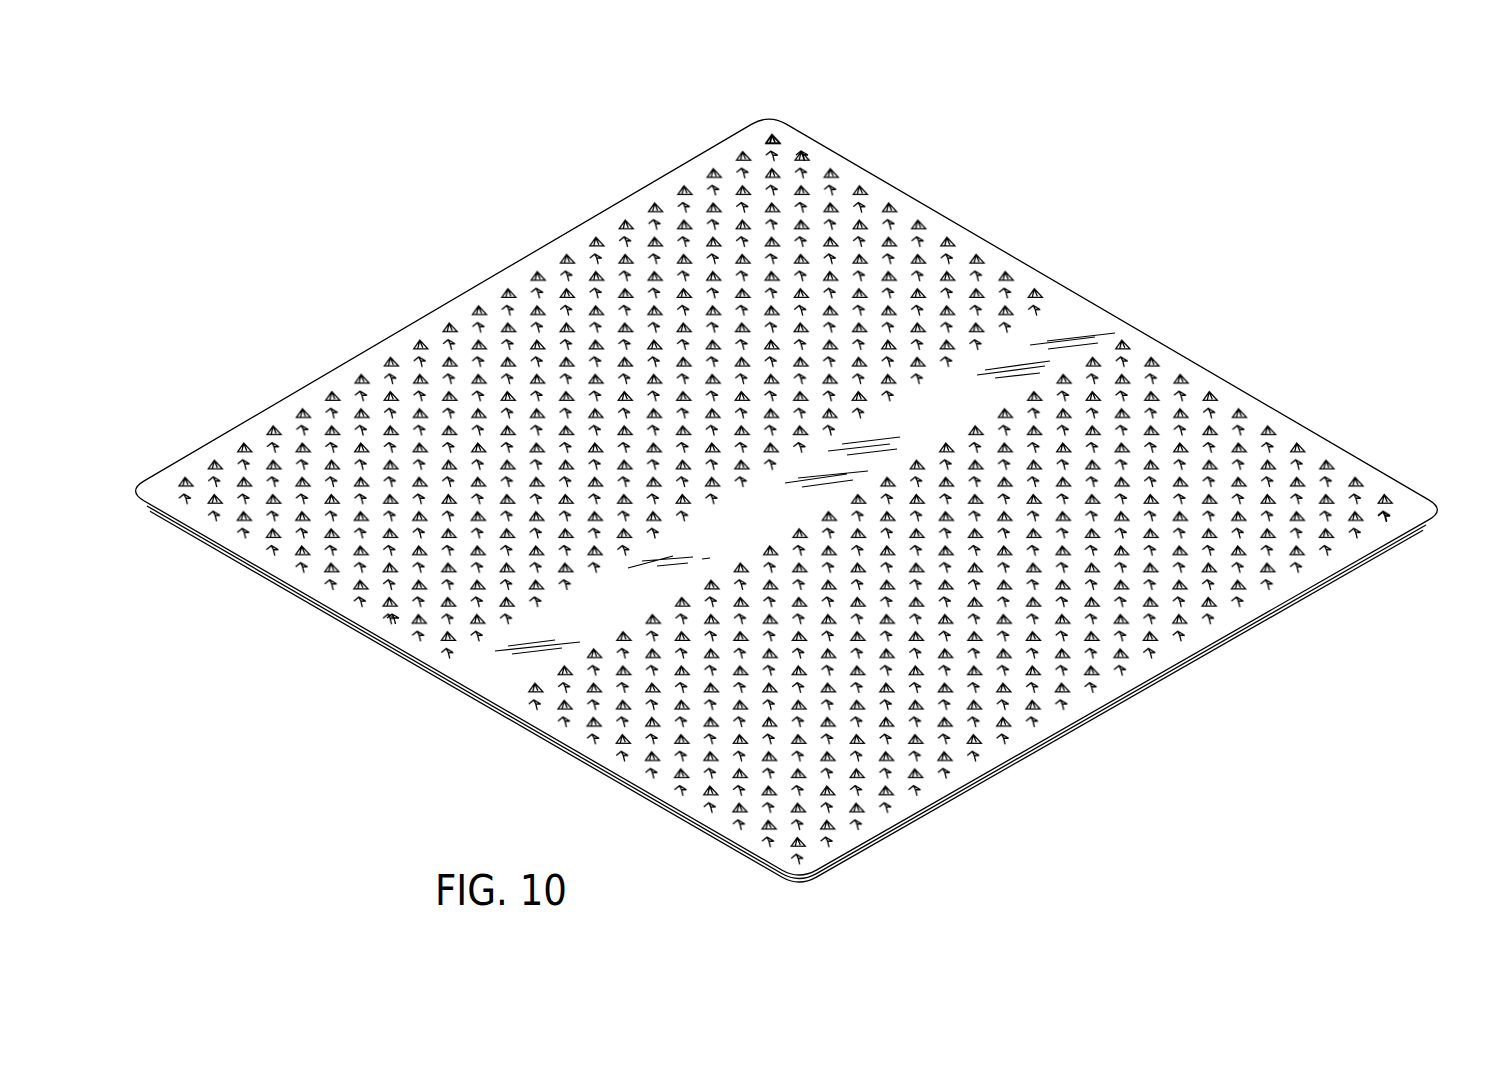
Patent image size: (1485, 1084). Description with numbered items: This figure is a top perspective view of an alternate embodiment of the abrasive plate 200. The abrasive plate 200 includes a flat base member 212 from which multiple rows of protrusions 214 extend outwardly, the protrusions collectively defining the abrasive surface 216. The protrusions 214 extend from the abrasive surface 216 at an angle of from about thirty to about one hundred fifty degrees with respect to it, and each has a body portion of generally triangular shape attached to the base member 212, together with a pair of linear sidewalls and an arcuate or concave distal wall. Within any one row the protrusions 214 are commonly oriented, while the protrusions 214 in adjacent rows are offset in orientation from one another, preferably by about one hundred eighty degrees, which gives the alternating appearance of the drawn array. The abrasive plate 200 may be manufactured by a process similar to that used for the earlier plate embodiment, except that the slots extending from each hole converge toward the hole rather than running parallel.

The abrasive plate 200 is at (459, 222).
The base member 212 is at (1078, 731).
The protrusion 214 is at (388, 617).
The abrasive surface 216 is at (963, 252).